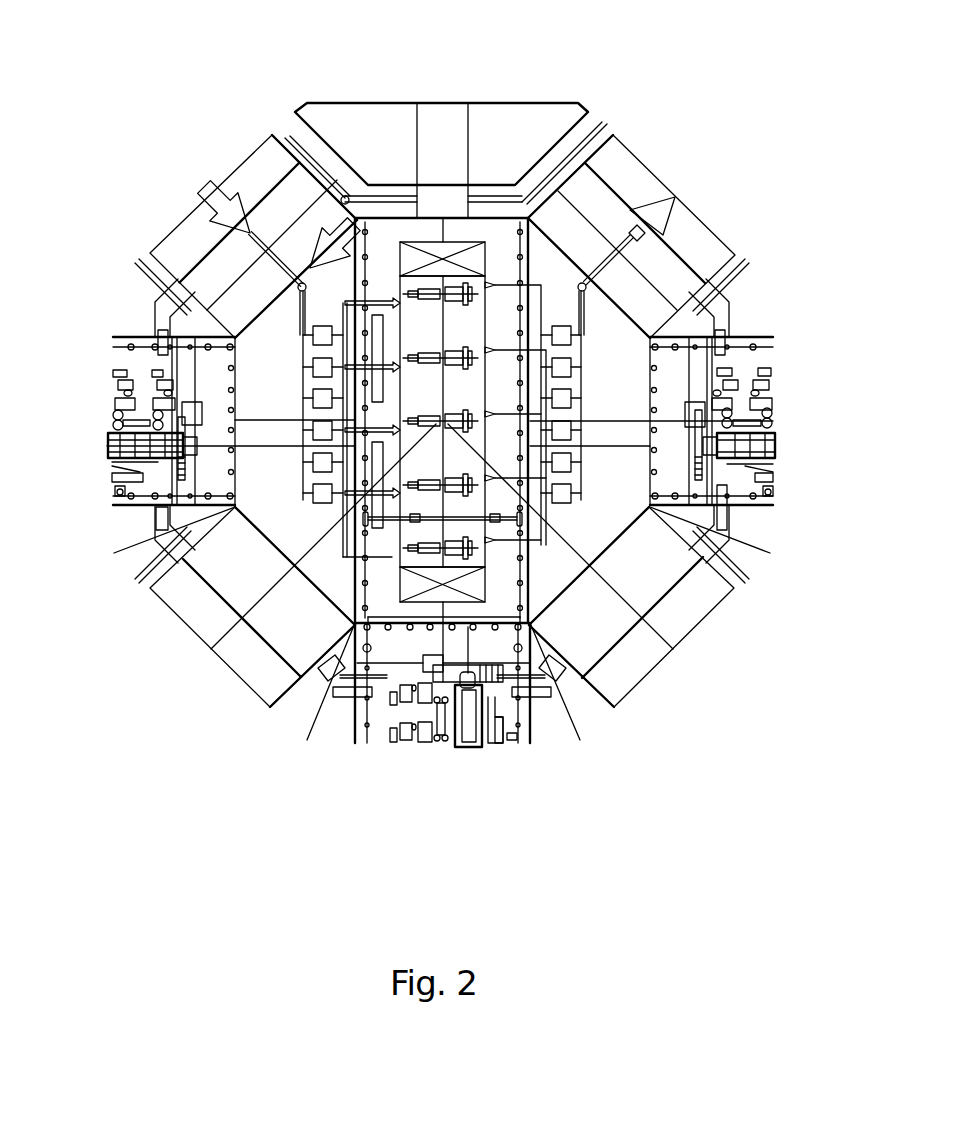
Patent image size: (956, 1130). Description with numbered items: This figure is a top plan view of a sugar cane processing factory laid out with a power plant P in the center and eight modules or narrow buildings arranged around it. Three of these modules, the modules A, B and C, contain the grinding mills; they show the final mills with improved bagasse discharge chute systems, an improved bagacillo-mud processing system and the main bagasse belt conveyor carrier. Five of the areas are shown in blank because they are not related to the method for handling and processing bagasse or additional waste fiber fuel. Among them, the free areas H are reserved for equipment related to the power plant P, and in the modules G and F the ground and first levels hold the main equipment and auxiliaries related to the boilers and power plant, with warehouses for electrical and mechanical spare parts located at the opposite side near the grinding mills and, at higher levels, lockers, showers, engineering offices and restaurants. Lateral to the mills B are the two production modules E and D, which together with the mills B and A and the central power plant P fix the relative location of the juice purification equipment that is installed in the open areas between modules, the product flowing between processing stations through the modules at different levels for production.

The free areas H is at (440, 78).
The module G is at (195, 175).
The module F is at (690, 178).
The production module E is at (195, 660).
The production module D is at (690, 665).
The module C is at (82, 420).
The module A is at (802, 421).
The module B is at (445, 780).
The power plant P is at (432, 399).